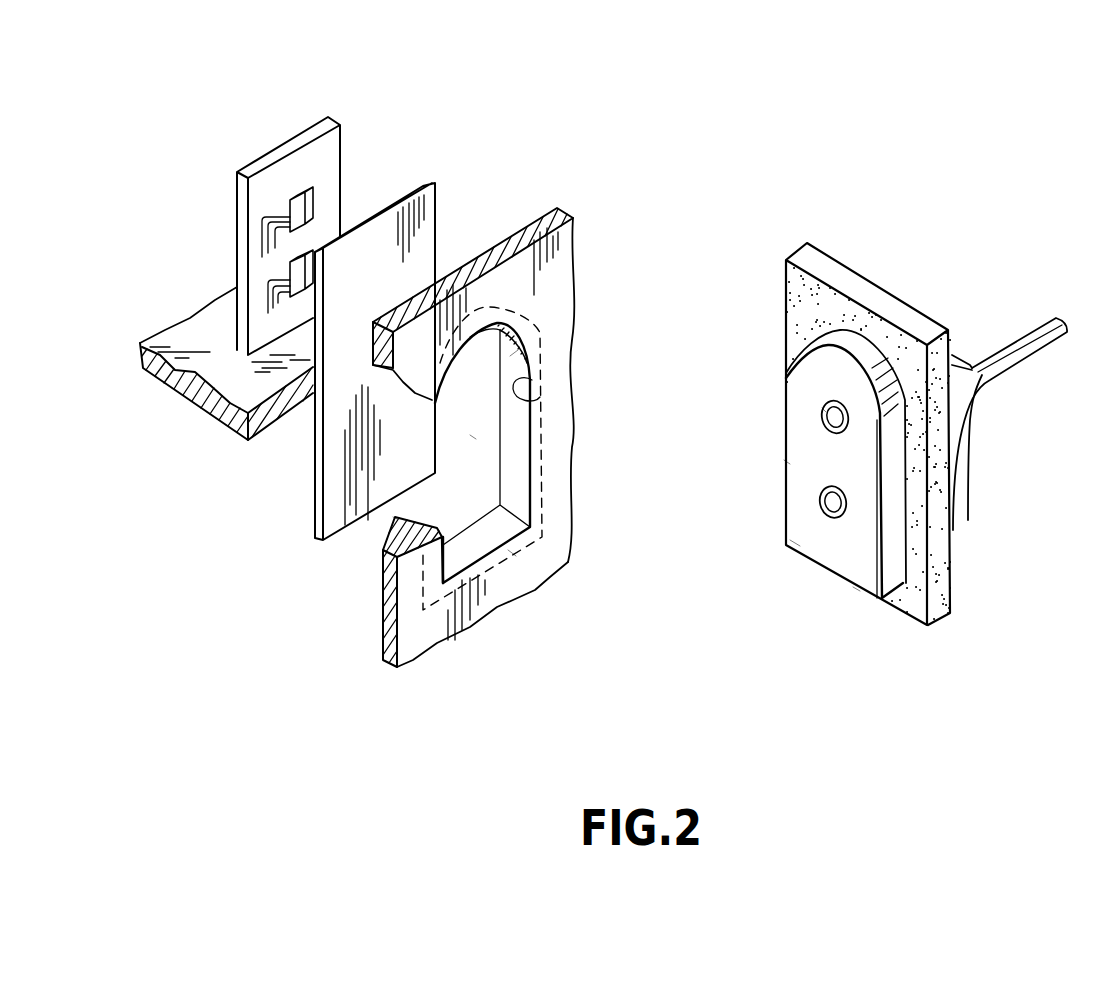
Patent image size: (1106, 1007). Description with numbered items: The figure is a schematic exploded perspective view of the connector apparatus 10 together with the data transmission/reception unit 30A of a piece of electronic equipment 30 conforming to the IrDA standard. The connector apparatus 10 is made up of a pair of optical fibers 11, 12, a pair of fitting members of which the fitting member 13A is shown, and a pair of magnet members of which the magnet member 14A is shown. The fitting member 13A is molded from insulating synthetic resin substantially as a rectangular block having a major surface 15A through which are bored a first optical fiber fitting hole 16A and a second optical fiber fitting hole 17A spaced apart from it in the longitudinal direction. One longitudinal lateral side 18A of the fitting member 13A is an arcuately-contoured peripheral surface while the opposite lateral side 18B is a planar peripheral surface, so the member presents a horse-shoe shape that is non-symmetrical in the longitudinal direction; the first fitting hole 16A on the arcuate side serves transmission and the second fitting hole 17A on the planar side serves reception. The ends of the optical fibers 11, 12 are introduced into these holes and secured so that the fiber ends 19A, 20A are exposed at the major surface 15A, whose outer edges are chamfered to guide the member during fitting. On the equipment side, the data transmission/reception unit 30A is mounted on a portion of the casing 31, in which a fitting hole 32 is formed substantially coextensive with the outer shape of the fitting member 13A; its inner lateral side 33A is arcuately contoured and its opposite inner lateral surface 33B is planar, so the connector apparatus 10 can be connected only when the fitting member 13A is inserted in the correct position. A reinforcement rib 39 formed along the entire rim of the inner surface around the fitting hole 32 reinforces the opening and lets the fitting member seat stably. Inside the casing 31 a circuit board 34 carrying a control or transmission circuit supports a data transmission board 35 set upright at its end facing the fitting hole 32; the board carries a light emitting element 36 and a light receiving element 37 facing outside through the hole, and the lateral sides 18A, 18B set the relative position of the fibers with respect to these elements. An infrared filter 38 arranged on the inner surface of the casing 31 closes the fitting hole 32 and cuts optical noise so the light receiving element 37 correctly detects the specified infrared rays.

The connector apparatus 10 is at (914, 143).
The optical fiber 11 is at (972, 362).
The optical fiber 12 is at (980, 422).
The fitting member 13A is at (786, 431).
The magnet member 14A is at (785, 290).
The major surface 15A is at (813, 543).
The first optical fiber fitting hole 16A is at (825, 410).
The second optical fiber fitting hole 17A is at (473, 437).
The longitudinal lateral side 18A is at (857, 345).
The opposite lateral side 18B is at (853, 588).
The end of optical fiber 19A is at (787, 463).
The end of optical fiber 20A is at (837, 513).
The electronic equipment 30 is at (522, 116).
The data transmission/reception unit 30A is at (462, 495).
The casing 31 is at (562, 258).
The fitting hole 32 is at (540, 397).
The inner lateral side 33A is at (513, 360).
The inner lateral surface 33B is at (512, 553).
The circuit board 34 is at (233, 382).
The data transmission board 35 is at (240, 227).
The light emitting element 36 is at (310, 207).
The light receiving element 37 is at (305, 270).
The infrared filter 38 is at (428, 222).
The reinforcement rib 39 is at (396, 516).